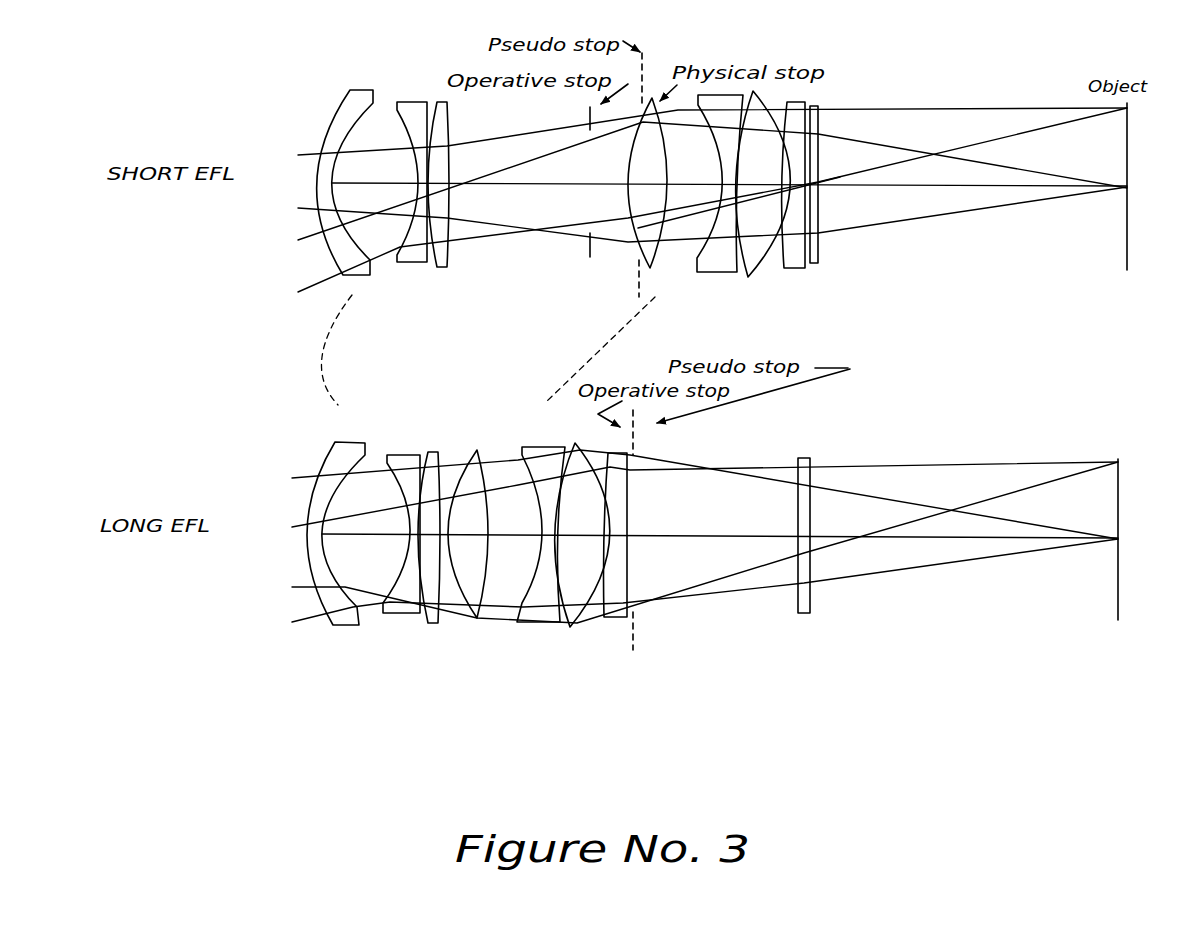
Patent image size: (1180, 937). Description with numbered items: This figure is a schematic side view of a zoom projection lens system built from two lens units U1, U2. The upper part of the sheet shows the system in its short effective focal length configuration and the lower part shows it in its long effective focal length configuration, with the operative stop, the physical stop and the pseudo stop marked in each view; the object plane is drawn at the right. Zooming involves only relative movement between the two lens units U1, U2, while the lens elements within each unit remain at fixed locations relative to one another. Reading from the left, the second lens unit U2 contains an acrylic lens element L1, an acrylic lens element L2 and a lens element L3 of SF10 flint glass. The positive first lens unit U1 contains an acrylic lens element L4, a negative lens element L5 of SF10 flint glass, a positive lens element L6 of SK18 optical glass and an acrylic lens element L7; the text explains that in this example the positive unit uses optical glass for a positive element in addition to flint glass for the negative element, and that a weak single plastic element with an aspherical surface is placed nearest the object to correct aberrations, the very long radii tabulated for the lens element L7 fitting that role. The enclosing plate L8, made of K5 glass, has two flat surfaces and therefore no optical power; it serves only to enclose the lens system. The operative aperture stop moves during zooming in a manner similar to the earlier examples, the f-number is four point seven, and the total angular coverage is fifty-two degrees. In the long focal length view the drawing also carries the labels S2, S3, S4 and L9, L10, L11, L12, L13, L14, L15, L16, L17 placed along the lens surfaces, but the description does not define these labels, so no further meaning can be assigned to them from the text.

The first lens unit U1 is at (807, 53).
The second lens unit U2 is at (447, 88).
The lens element L1 is at (336, 524).
The lens element L2 is at (401, 522).
The lens element L3 is at (434, 527).
The lens element L4 is at (468, 523).
The lens element L5 is at (417, 685).
The lens element L6 is at (423, 648).
The lens element L7 is at (620, 513).
The enclosing plate L8 is at (482, 680).
The lens surface 9 L9 is at (485, 620).
The lens surface 10 L10 is at (537, 623).
The lens surface 11 L11 is at (552, 622).
The lens surface 12 L12 is at (570, 620).
The lens surface 13 L13 is at (573, 622).
The lens surface 14 L14 is at (630, 577).
The lens surface 15 L15 is at (657, 593).
The lens surface 16 L16 is at (797, 600).
The lens surface 17 L17 is at (810, 600).
The lens surface S2 is at (333, 618).
The lens surface S3 is at (353, 607).
The lens surface S4 is at (390, 603).